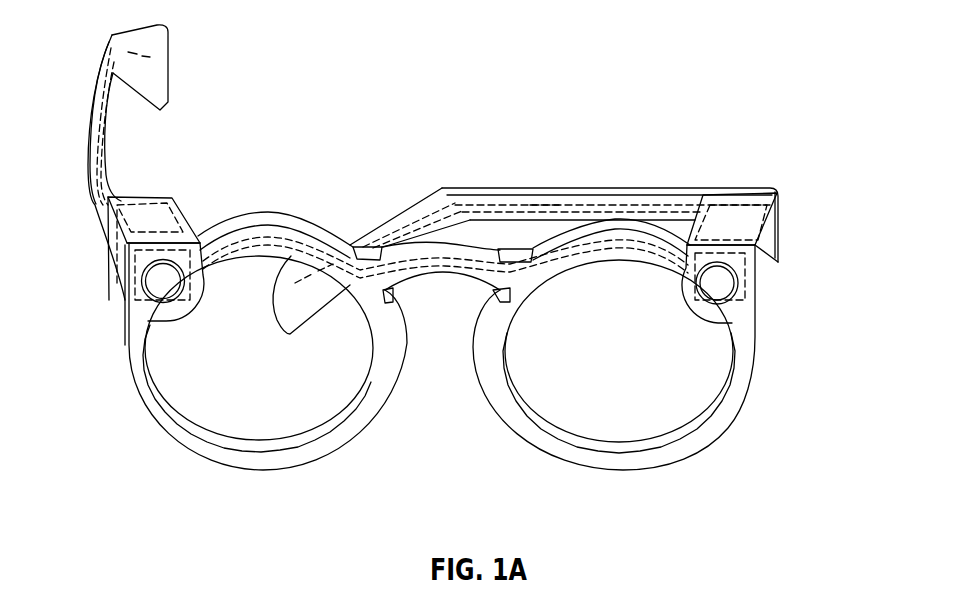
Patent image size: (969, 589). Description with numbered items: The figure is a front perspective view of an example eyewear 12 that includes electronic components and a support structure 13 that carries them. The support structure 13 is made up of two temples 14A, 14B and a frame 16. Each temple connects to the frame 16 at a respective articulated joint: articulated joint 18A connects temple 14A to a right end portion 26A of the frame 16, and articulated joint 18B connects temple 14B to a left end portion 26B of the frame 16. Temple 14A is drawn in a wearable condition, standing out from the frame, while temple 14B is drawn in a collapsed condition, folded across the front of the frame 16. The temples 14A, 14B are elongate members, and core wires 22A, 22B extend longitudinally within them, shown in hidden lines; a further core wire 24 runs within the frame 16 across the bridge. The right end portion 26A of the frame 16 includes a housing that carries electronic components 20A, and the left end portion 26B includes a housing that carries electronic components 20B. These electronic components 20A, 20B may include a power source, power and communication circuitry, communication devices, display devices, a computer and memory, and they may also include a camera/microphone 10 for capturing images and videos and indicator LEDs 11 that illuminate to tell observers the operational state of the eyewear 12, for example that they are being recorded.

The camera/microphone 10 is at (158, 298).
The indicator LEDs 11 is at (713, 299).
The eyewear 12 is at (555, 470).
The support structure 13 is at (425, 228).
The temple 14A is at (186, 63).
The temple 14B is at (622, 183).
The frame 16 is at (728, 426).
The articulated joint 18A is at (195, 200).
The articulated joint 18B is at (803, 192).
The electronic components 20A is at (113, 251).
The electronic components 20B is at (778, 255).
The core wire 22A is at (124, 42).
The core wire 22B is at (522, 190).
The core wire 24 is at (450, 273).
The right end portion 26A is at (171, 175).
The left end portion 26B is at (812, 158).